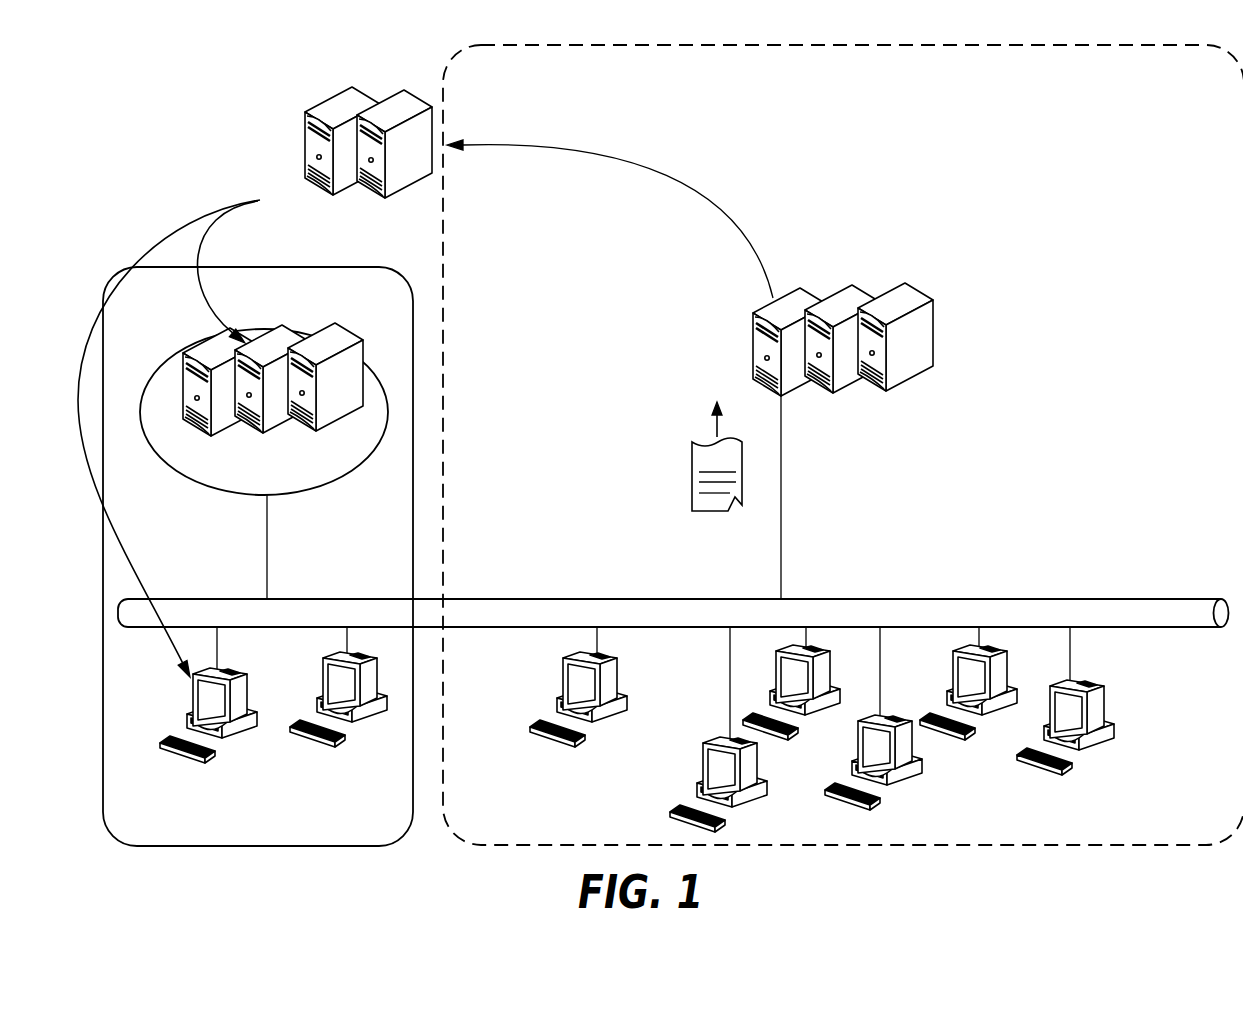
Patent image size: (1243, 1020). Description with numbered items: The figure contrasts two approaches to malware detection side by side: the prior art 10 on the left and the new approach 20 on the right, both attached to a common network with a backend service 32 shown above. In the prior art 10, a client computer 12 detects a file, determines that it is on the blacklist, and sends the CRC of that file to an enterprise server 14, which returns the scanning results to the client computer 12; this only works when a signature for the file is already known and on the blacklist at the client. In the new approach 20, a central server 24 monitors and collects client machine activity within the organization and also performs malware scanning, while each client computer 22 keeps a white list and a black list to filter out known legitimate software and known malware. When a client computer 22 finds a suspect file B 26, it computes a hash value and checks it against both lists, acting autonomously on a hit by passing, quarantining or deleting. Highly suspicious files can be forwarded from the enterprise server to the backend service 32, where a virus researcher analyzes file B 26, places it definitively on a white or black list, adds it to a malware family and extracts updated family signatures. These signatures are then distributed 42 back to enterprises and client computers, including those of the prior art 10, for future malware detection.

The prior art 10 is at (380, 308).
The client computer 12 is at (237, 731).
The enterprise server 14 is at (350, 379).
The new approach 20 is at (1172, 148).
The client computer 22 is at (607, 716).
The central server 24 is at (922, 342).
The file B 26 is at (705, 513).
The backend service 32 is at (333, 110).
The signature distribution 42 is at (190, 217).